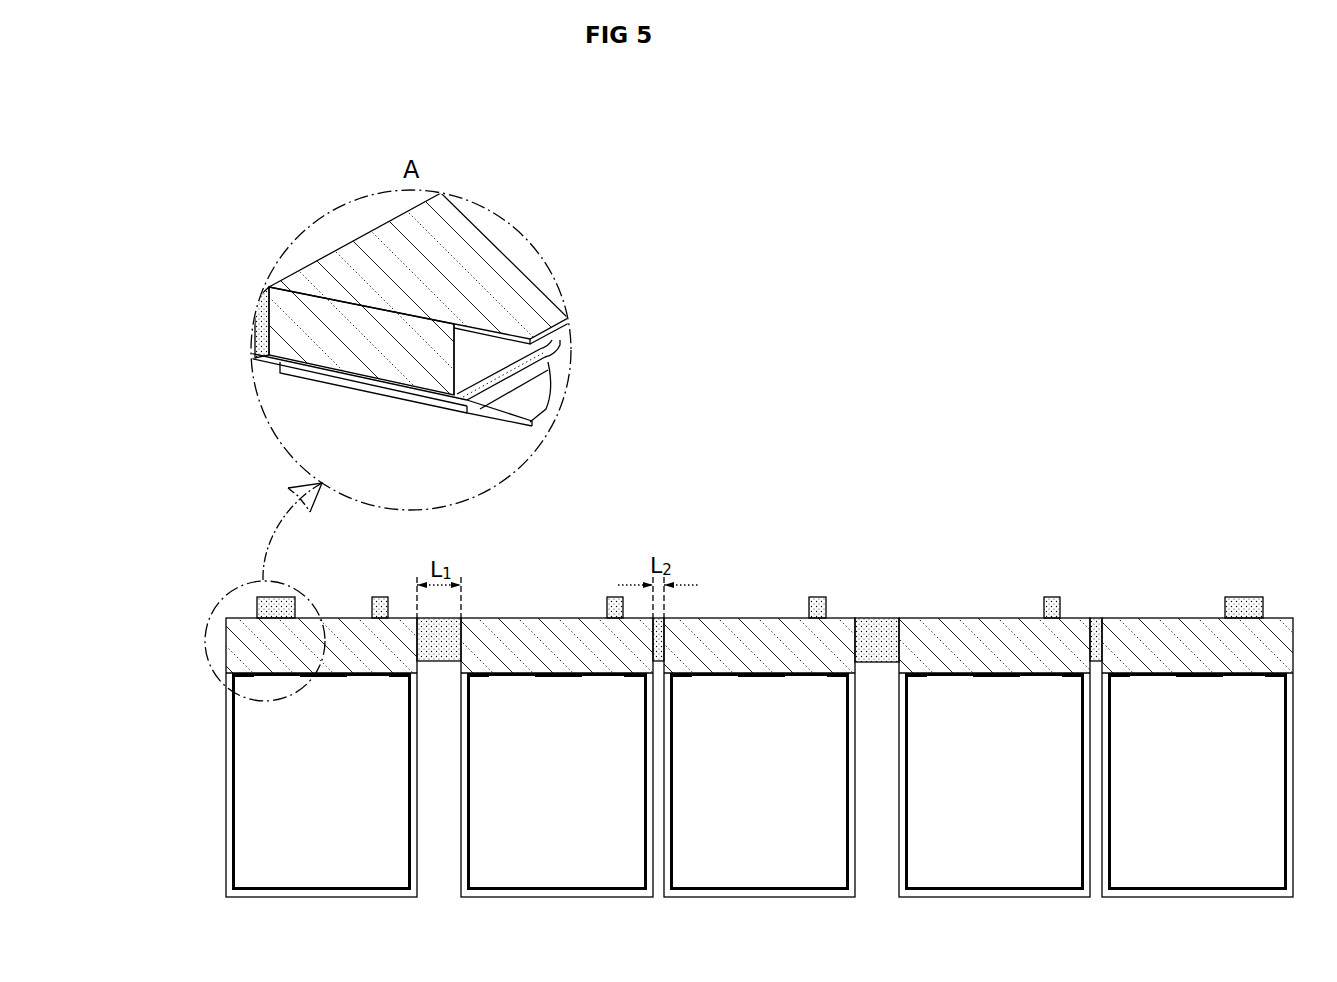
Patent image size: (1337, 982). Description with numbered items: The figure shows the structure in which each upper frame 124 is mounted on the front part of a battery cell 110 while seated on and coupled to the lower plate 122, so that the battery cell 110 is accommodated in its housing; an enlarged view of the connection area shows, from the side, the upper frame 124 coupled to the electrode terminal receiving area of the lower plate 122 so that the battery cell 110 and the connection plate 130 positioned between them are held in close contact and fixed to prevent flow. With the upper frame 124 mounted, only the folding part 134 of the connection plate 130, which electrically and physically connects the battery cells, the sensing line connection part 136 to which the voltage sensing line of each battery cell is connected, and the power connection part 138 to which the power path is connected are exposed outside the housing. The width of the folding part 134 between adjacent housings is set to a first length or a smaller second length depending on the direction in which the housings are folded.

The battery cell 110 is at (242, 813).
The lower plate 122 is at (322, 380).
The upper frame 124 is at (243, 652).
The connection plate 130 is at (253, 323).
The folding part 134 is at (452, 640).
The sensing line connection part 136 is at (380, 597).
The power connection part 138 is at (286, 602).